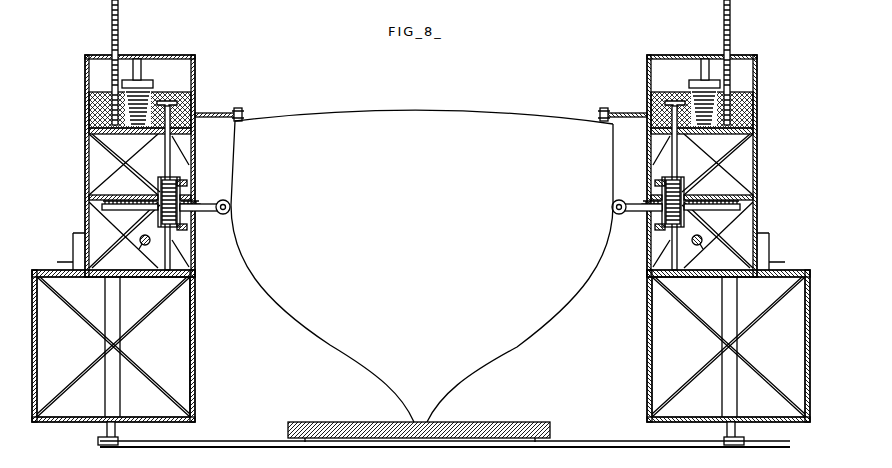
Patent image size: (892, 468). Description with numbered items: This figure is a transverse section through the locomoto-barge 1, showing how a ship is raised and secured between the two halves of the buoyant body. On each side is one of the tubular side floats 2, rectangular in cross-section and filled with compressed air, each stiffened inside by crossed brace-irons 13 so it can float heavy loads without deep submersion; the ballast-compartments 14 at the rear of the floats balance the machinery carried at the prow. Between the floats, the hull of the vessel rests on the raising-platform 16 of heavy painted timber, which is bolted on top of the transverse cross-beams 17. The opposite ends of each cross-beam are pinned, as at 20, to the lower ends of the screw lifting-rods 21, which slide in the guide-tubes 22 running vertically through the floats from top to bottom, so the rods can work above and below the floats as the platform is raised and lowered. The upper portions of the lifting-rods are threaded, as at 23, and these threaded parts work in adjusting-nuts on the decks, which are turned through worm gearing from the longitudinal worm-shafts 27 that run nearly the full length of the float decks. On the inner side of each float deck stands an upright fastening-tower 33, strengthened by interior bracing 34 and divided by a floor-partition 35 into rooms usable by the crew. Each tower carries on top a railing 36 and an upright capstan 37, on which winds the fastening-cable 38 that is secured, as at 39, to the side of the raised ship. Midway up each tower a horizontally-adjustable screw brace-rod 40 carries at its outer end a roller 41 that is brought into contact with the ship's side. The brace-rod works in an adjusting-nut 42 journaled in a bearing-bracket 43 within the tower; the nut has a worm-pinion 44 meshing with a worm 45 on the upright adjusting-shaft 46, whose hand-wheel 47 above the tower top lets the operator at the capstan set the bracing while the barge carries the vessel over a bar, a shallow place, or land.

The barge 1 is at (199, 347).
The tubular side floats 2 is at (44, 270).
The crossed brace-irons 13 is at (88, 334).
The ballast-compartments 14 is at (422, 211).
The raising-platform 16 is at (316, 422).
The transverse cross-beams 17 is at (233, 448).
The connection of cross-beams to lifting-rods 20 is at (108, 446).
The screw lifting-rods 21 is at (106, 429).
The guide-tubes 22 is at (115, 297).
The threaded portions of lifting-rods 23 is at (119, 18).
The longitudinal worm-shafts 27 is at (139, 249).
The fastening-towers 33 is at (85, 160).
The interior bracing 34 is at (121, 231).
The floor-partition 35 is at (103, 195).
The railing 36 is at (89, 99).
The upright capstan 37 is at (150, 83).
The fastening-cable 38 is at (217, 118).
The cable attachment point 39 is at (243, 111).
The screw brace-rod 40 is at (202, 212).
The roller 41 is at (229, 202).
The adjusting-nut 42 is at (181, 201).
The bearing-bracket 43 is at (160, 211).
The worm-pinion 44 is at (186, 191).
The worm 45 is at (162, 190).
The upright adjusting-shaft 46 is at (165, 149).
The hand-wheel 47 is at (181, 96).